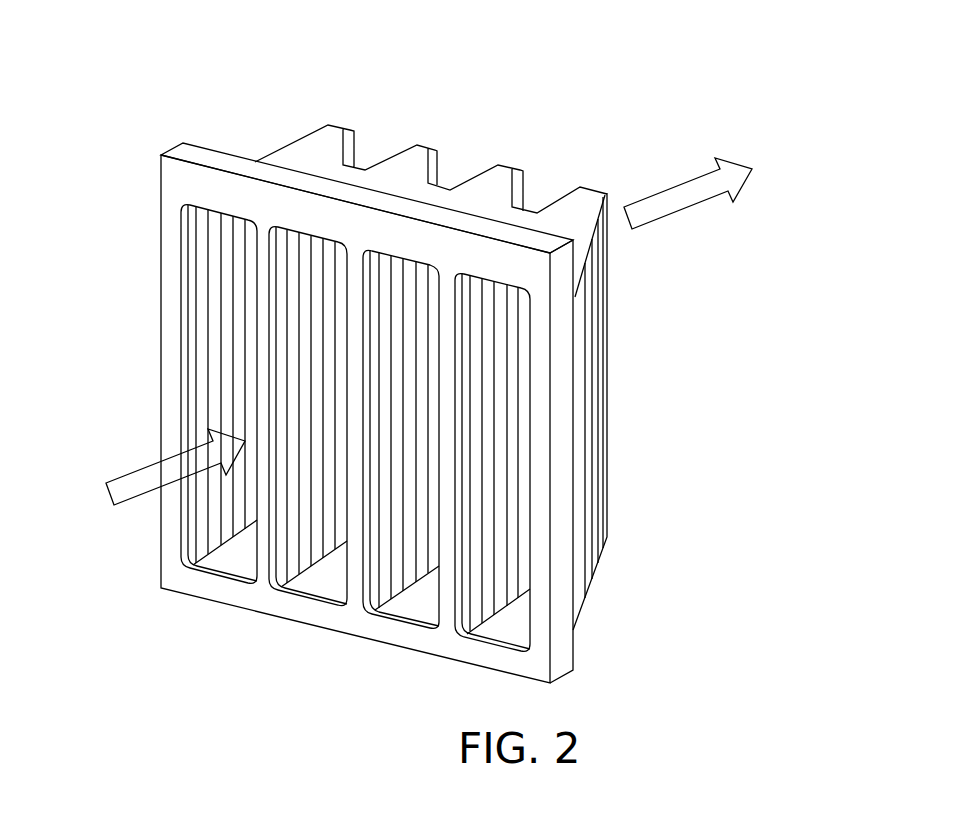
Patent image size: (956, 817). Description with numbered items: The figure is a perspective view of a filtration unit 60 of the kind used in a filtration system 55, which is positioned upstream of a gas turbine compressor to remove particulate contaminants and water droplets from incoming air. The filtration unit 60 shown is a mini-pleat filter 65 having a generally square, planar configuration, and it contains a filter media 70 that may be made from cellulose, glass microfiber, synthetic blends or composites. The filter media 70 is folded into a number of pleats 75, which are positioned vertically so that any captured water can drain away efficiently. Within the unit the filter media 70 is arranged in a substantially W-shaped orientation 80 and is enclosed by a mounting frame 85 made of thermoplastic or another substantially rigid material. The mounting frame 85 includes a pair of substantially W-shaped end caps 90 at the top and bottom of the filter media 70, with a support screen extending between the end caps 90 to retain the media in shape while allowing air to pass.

The filtration system 55 is at (172, 55).
The filtration unit 60 is at (176, 148).
The mini-pleat filter 65 is at (203, 291).
The filter media 70 is at (196, 314).
The pleats 75 is at (214, 350).
The W-shaped orientation 80 is at (178, 410).
The mounting frame 85 is at (178, 540).
The W-shaped end caps 90 is at (336, 145).